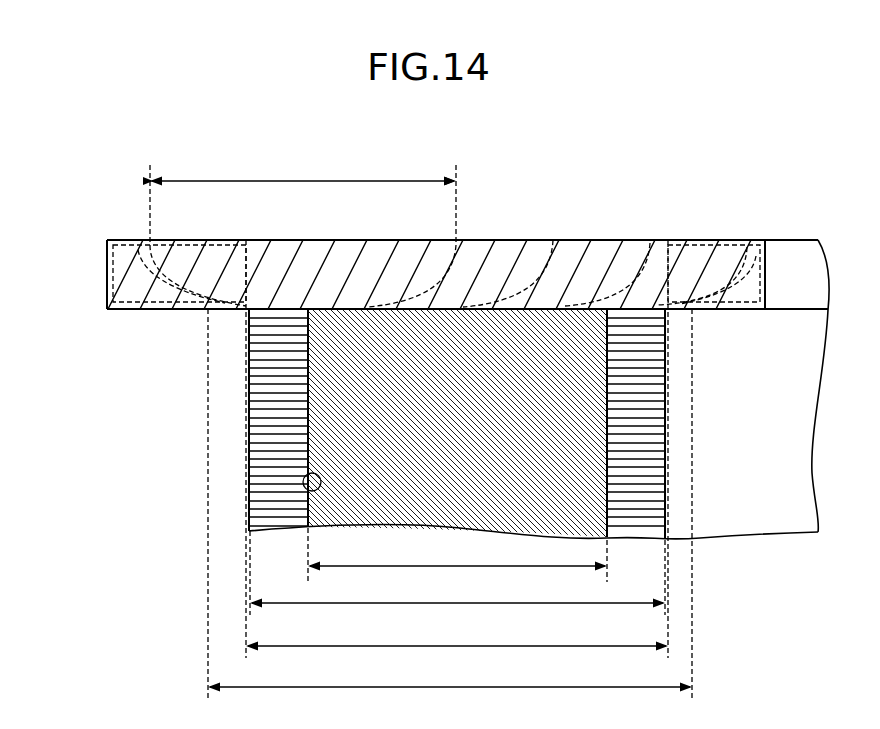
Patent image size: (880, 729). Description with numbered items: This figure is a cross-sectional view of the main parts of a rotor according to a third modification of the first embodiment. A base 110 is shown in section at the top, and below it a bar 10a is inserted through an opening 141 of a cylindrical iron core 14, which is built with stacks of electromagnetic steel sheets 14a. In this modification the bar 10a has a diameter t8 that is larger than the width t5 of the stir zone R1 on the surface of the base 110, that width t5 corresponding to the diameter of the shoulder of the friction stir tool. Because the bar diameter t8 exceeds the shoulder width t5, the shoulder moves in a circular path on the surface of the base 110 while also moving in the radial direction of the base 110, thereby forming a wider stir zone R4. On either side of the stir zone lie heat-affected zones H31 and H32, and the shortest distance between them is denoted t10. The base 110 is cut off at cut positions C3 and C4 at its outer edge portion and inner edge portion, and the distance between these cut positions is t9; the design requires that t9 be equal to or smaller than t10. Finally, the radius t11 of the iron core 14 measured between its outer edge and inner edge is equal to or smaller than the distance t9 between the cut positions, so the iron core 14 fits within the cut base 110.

The base 110 is at (107, 266).
The heat-affected zone H31 is at (120, 250).
The stir zone R1 is at (183, 254).
The cut position C3 is at (243, 270).
The width of the stir zone t5 is at (303, 201).
The stir zone R4 is at (587, 239).
The cut position C4 is at (672, 262).
The heat-affected zone H32 is at (755, 248).
The bar 10a is at (330, 372).
The iron core 14 is at (249, 430).
The electromagnetic steel sheet 14a is at (267, 392).
The opening 141 is at (308, 492).
The diameter of the bar t8 is at (457, 561).
The radius of the iron core t11 is at (457, 580).
The distance between cut positions t9 is at (457, 658).
The shortest distance between heat-affected zones t10 is at (450, 511).